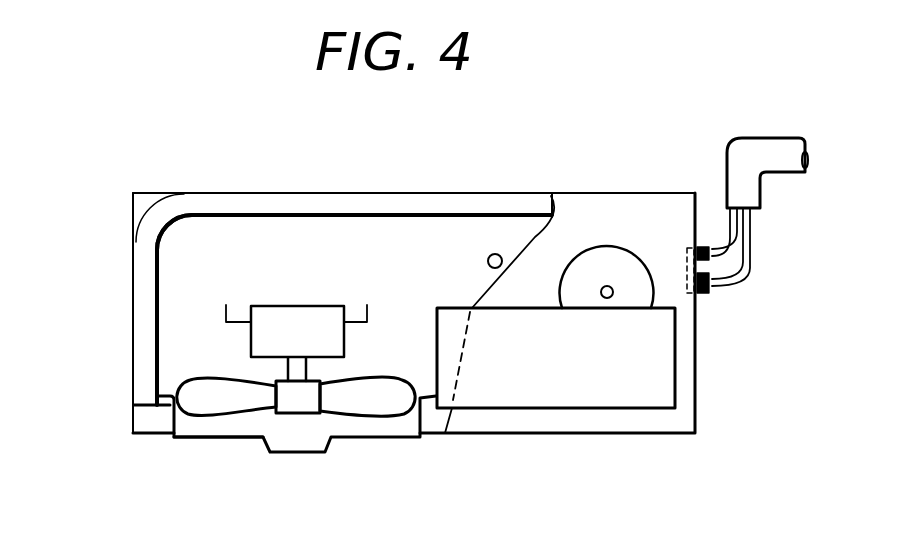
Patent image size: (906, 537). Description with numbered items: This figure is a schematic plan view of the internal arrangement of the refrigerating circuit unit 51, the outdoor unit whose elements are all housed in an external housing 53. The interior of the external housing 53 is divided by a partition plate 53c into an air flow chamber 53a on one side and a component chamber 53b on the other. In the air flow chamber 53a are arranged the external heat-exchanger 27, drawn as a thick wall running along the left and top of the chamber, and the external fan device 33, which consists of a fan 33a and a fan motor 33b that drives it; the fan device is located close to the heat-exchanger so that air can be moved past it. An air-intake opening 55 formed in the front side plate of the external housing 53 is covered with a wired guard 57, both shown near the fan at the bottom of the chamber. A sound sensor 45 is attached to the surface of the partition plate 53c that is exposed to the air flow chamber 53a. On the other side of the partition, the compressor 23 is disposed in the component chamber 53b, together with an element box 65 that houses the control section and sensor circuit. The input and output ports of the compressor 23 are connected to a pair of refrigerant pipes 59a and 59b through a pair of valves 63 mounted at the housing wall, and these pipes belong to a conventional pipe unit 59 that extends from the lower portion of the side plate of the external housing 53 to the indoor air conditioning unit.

The refrigerating circuit unit 51 is at (118, 270).
The external housing 53 is at (418, 193).
The air flow chamber 53a is at (197, 230).
The component chamber 53b is at (623, 205).
The partition plate 53c is at (540, 212).
The external heat-exchanger 27 is at (303, 200).
The sound sensor 45 is at (502, 254).
The compressor 23 is at (632, 252).
The element box 65 is at (675, 353).
The pipe unit 59 is at (748, 137).
The refrigerant pipe 59a is at (748, 236).
The refrigerant pipe 59b is at (752, 254).
The valves 63 is at (707, 292).
The external fan device 33 is at (296, 375).
The fan 33a is at (253, 412).
The fan motor 33b is at (303, 318).
The air-intake opening 55 is at (192, 428).
The wired guard 57 is at (217, 442).